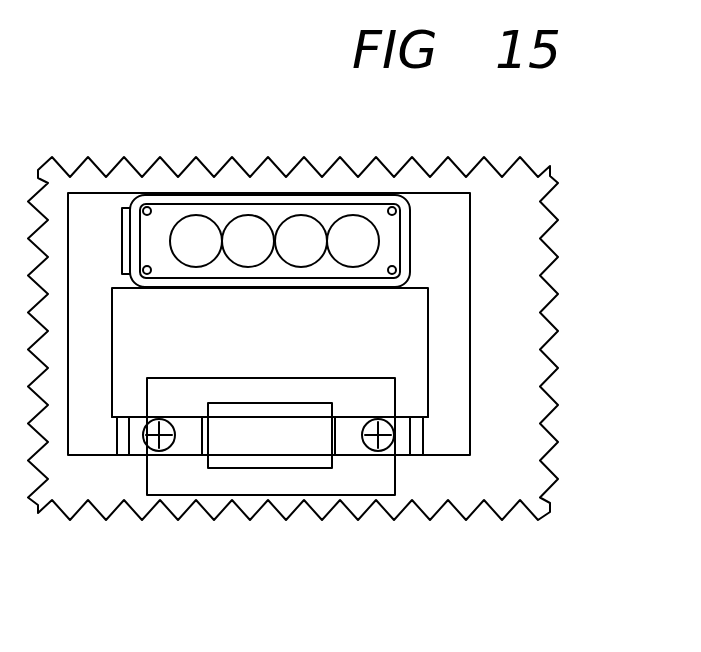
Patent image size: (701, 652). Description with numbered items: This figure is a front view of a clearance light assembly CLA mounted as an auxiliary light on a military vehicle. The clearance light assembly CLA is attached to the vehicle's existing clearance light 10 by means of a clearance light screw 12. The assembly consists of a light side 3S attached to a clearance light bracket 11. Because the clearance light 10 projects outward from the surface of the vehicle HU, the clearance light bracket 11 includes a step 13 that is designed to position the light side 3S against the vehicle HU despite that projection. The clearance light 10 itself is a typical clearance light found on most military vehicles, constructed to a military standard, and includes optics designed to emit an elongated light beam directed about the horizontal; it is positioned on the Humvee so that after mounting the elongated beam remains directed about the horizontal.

The light side 3S is at (388, 231).
The vehicle HU is at (503, 263).
The clearance light assembly CLA is at (453, 290).
The clearance light bracket 11 is at (455, 378).
The clearance light screw 12 is at (385, 428).
The step 13 is at (415, 447).
The clearance light 10 is at (392, 480).